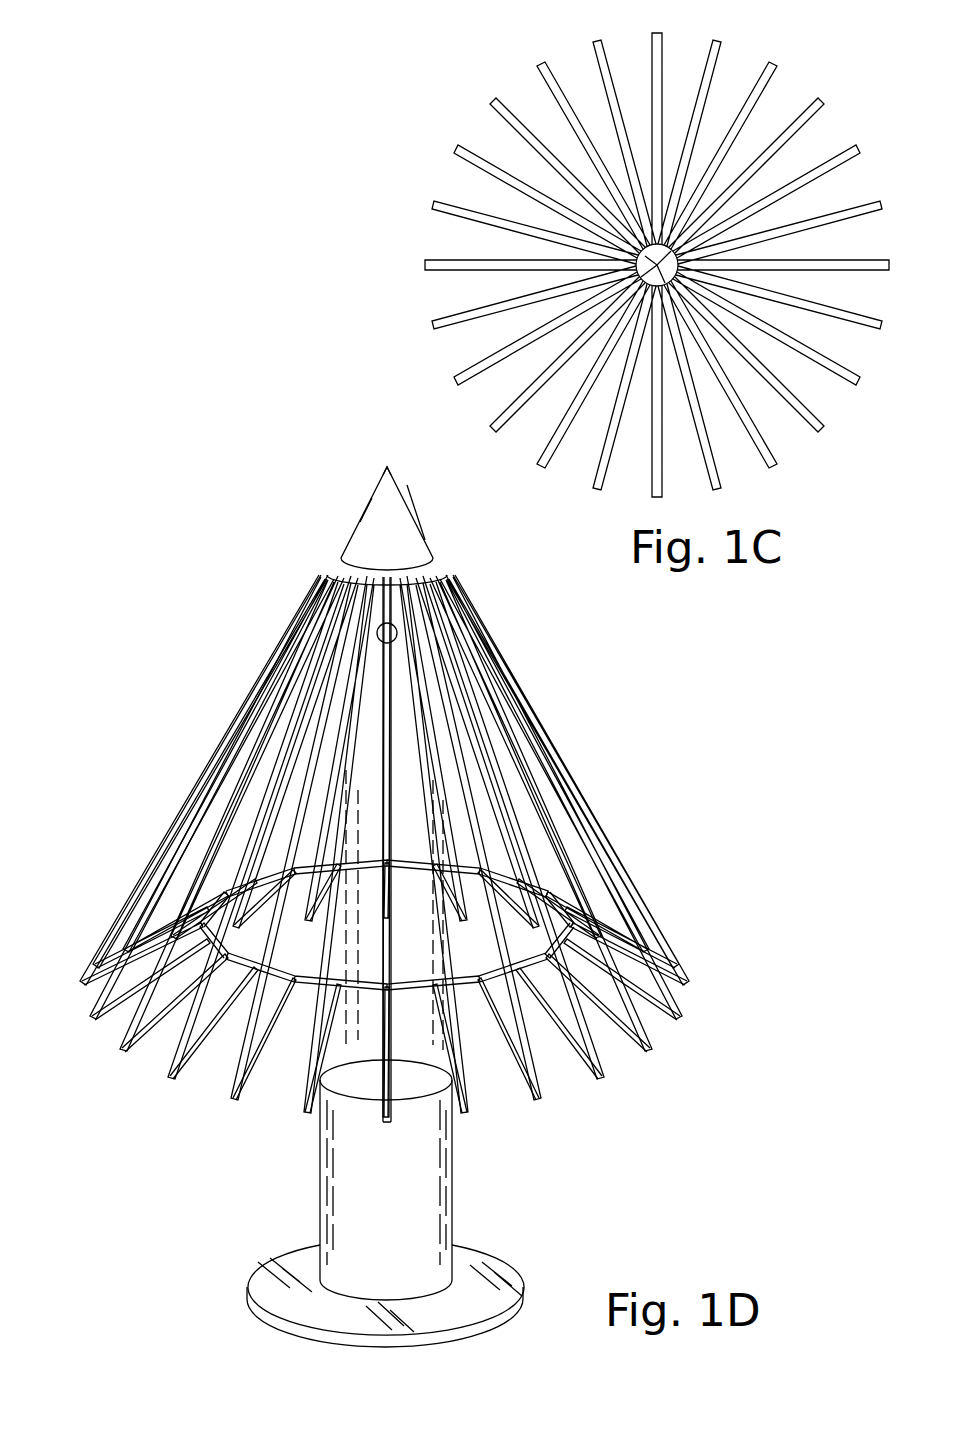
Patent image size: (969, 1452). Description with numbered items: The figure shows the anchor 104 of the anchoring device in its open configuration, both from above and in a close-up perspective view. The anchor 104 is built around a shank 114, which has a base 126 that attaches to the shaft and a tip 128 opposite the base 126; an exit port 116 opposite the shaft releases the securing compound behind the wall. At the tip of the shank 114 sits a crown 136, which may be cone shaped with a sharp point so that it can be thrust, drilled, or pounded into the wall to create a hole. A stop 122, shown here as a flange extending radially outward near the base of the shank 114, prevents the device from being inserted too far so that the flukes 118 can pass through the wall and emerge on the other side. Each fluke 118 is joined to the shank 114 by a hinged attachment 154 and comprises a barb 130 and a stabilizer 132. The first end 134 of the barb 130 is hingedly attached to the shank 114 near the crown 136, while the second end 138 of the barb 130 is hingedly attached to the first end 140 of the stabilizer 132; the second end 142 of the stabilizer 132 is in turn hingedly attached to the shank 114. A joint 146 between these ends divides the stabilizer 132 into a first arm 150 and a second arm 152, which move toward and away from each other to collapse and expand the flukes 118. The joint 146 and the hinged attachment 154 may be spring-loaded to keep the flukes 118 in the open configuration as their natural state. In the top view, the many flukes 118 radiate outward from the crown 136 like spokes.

In FIG. 1C, the anchor 104 is at (438, 133).
In FIG. 1D, the anchor 104 is at (165, 590).
In FIG. 1D, the shank 114 is at (455, 1210).
In FIG. 1D, the exit port 116 is at (398, 628).
In FIG. 1C, the fluke 118 is at (780, 467).
In FIG. 1D, the fluke 118 is at (562, 748).
In FIG. 1D, the stop 122 is at (250, 1284).
In FIG. 1D, the base 126 is at (460, 1257).
In FIG. 1D, the tip 128 is at (350, 523).
In FIG. 1D, the barb 130 is at (640, 912).
In FIG. 1D, the stabilizer 132 is at (528, 1076).
In FIG. 1D, the first end of the barb 134 is at (308, 585).
In FIG. 1C, the crown 136 is at (680, 226).
In FIG. 1D, the crown 136 is at (382, 472).
In FIG. 1D, the second end of the barb 138 is at (86, 948).
In FIG. 1D, the first end of the stabilizer 140 is at (238, 1103).
In FIG. 1D, the second end of the stabilizer 142 is at (356, 1050).
In FIG. 1D, the joint 146 is at (468, 988).
In FIG. 1D, the first arm 150 is at (176, 1082).
In FIG. 1D, the second arm 152 is at (335, 1000).
In FIG. 1D, the hinged attachment 154 is at (338, 578).